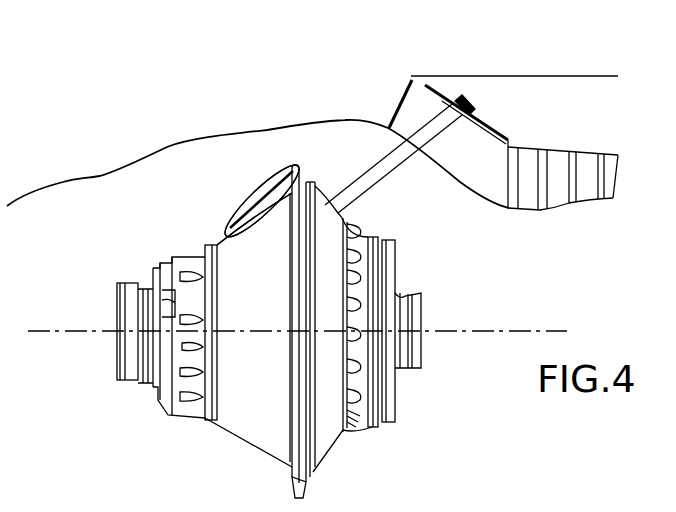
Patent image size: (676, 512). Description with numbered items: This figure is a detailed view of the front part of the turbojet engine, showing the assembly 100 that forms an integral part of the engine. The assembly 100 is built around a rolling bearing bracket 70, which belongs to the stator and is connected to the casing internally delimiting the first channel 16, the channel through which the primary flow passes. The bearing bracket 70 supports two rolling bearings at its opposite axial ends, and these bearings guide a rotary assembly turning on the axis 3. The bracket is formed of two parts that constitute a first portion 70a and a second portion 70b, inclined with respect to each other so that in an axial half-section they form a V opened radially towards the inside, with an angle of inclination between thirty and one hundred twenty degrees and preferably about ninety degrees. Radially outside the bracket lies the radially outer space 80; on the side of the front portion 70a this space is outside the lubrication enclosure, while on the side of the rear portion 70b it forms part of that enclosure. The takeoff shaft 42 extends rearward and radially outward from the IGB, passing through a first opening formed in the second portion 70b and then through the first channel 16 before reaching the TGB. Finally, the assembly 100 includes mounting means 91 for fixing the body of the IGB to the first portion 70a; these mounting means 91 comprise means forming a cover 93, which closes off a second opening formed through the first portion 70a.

The axis 3 is at (62, 335).
The first channel 16 is at (487, 169).
The takeoff shaft 42 is at (438, 123).
The rolling bearing bracket 70 is at (257, 422).
The first portion of the bearing bracket 70a is at (237, 248).
The second portion of the bearing bracket 70b is at (338, 221).
The radially outer space 80 is at (333, 163).
The mounting means 91 is at (259, 180).
The cover 93 is at (257, 204).
The assembly 100 is at (120, 186).